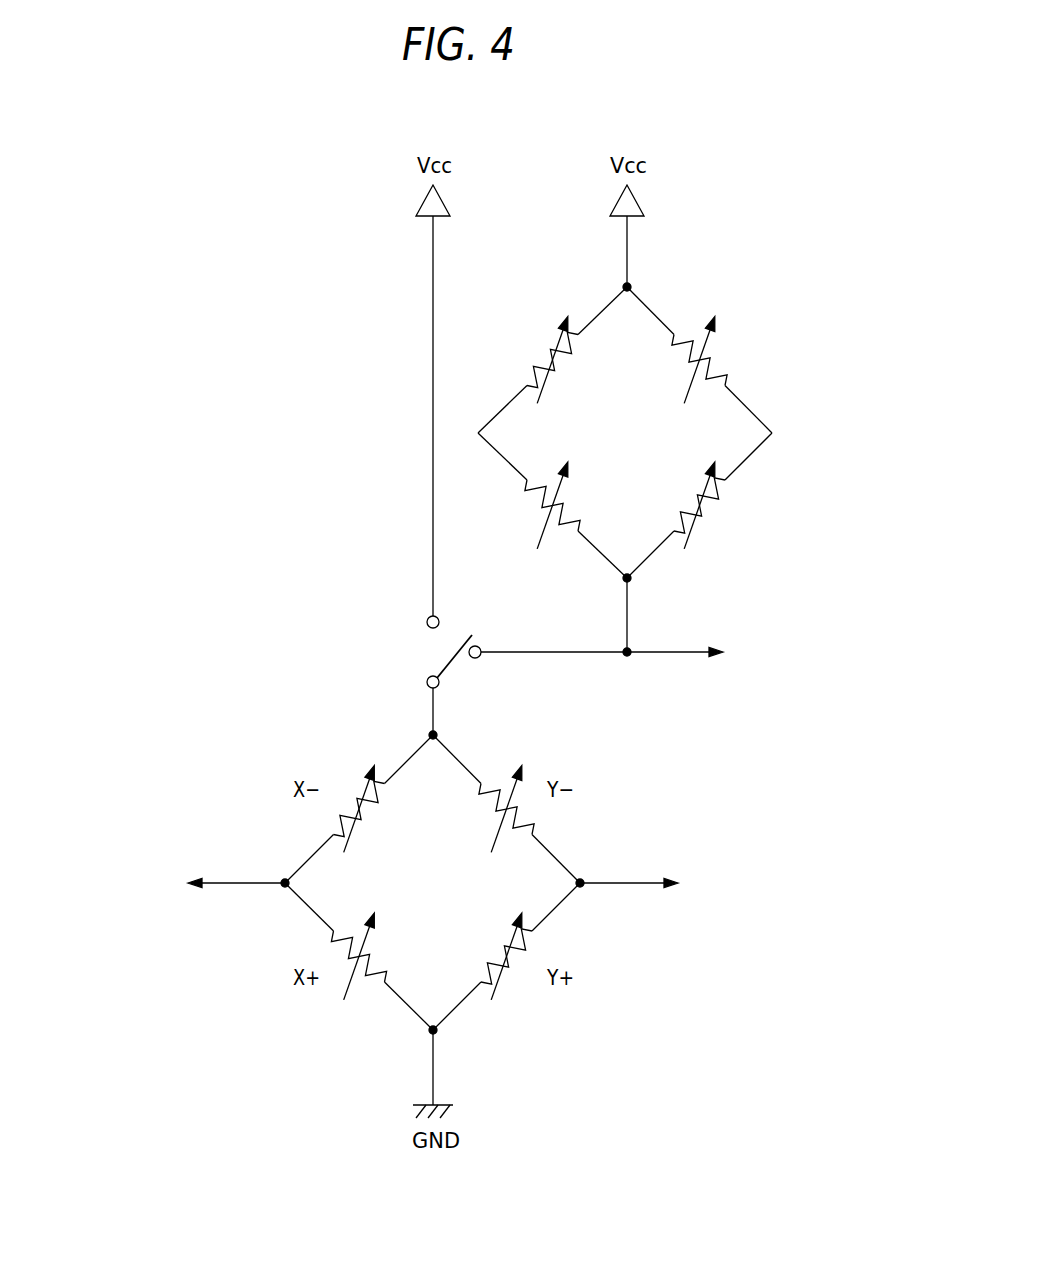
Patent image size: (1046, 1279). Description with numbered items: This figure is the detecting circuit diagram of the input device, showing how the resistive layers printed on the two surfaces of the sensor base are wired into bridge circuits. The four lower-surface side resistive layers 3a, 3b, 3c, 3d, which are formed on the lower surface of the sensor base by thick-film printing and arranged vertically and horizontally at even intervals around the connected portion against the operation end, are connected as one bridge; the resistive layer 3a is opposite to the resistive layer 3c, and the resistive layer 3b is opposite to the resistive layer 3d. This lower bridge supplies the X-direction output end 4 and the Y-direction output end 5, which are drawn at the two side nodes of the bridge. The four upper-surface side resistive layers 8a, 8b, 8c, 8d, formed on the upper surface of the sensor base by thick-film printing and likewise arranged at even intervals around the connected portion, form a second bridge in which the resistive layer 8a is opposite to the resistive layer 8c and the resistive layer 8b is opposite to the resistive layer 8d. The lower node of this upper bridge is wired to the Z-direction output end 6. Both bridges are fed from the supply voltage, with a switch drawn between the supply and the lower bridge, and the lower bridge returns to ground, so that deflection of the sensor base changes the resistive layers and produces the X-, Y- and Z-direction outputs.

The upper-surface side resistive layer 8a is at (525, 376).
The upper-surface side resistive layer 8b is at (732, 377).
The upper-surface side resistive layer 8c is at (525, 487).
The upper-surface side resistive layer 8d is at (730, 484).
The lower-surface side resistive layer 3a is at (331, 825).
The lower-surface side resistive layer 3b is at (537, 826).
The lower-surface side resistive layer 3c is at (331, 938).
The lower-surface side resistive layer 3d is at (536, 936).
The X-direction output end 4 is at (221, 883).
The Y-direction output end 5 is at (614, 883).
The Z-direction output end 6 is at (663, 652).